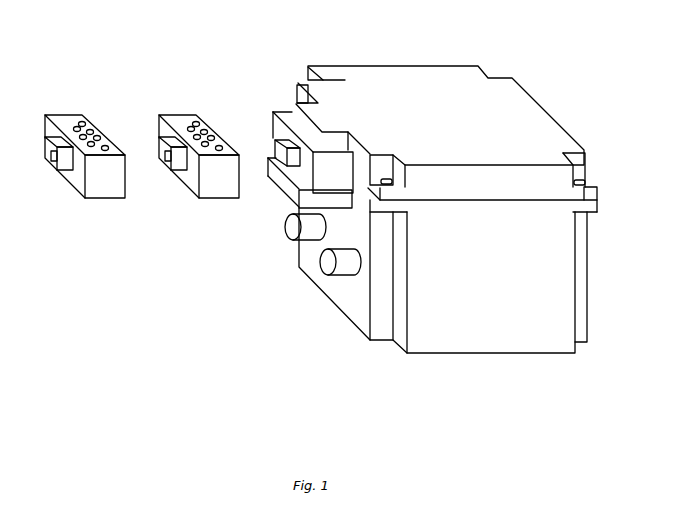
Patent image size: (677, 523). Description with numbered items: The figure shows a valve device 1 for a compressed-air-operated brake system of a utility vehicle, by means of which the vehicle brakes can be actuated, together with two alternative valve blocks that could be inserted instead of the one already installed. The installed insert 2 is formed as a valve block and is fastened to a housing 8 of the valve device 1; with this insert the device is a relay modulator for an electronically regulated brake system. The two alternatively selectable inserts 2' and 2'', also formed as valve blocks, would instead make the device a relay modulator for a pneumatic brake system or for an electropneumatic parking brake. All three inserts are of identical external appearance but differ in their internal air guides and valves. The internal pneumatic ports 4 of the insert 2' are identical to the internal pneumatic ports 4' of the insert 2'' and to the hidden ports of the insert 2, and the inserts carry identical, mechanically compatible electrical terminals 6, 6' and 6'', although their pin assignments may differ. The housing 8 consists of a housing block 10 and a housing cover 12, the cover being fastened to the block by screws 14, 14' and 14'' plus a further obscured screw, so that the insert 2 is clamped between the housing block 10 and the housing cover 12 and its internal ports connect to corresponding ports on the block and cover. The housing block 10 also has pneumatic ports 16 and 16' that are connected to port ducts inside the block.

The valve device 1 is at (530, 53).
The insert 2 is at (304, 140).
The insert 2' is at (191, 135).
The insert 2'' is at (74, 136).
The internal pneumatic ports 4 is at (210, 119).
The internal pneumatic ports 4' is at (98, 120).
The electrical terminal 6 is at (279, 153).
The electrical terminal 6' is at (162, 153).
The electrical terminal 6'' is at (47, 153).
The housing 8 is at (608, 200).
The housing block 10 is at (494, 283).
The housing cover 12 is at (437, 119).
The screw 14 is at (302, 72).
The screw 14' is at (387, 159).
The screw 14'' is at (581, 159).
The pneumatic port 16 is at (294, 235).
The pneumatic port 16' is at (319, 270).